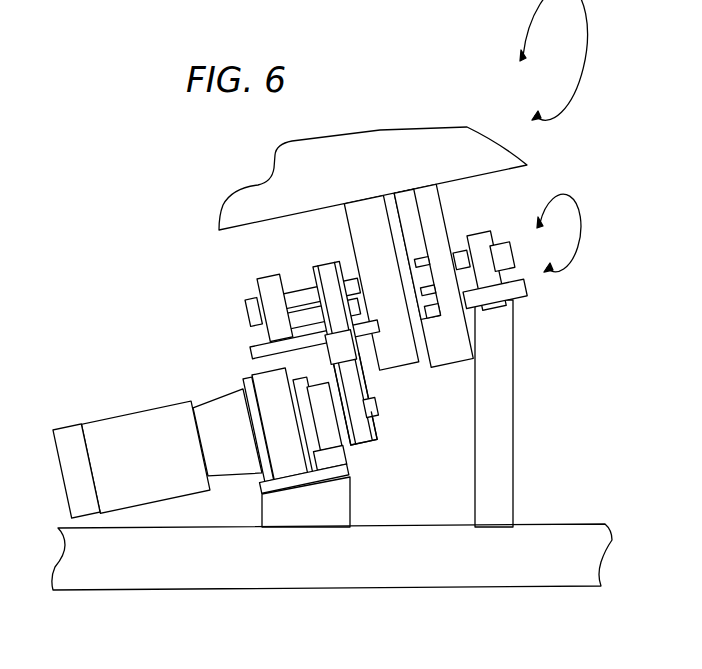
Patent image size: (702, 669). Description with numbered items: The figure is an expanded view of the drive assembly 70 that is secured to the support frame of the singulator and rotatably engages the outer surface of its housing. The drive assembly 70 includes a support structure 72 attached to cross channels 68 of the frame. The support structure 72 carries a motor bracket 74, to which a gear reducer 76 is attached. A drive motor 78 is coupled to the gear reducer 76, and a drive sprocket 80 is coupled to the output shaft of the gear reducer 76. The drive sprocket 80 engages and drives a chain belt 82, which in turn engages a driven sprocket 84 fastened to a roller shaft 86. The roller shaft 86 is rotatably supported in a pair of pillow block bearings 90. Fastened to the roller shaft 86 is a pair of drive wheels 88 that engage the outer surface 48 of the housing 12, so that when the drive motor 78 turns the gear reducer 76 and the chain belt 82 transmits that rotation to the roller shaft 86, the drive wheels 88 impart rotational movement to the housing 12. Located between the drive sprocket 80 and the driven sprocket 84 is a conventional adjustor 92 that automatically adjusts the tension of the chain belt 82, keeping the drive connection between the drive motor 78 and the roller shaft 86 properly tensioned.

The housing 12 is at (487, 167).
The outer surface 48 is at (457, 186).
The cross channels 68 is at (233, 580).
The drive assembly 70 is at (112, 386).
The support structure 72 is at (518, 425).
The motor bracket 74 is at (350, 501).
The gear reducer 76 is at (221, 407).
The drive motor 78 is at (98, 453).
The drive sprocket 80 is at (373, 442).
The chain belt 82 is at (353, 382).
The driven sprocket 84 is at (313, 281).
The roller shaft 86 is at (350, 293).
The drive wheels 88 is at (428, 193).
The pillow block bearings 90 is at (263, 291).
The adjustor 92 is at (344, 352).